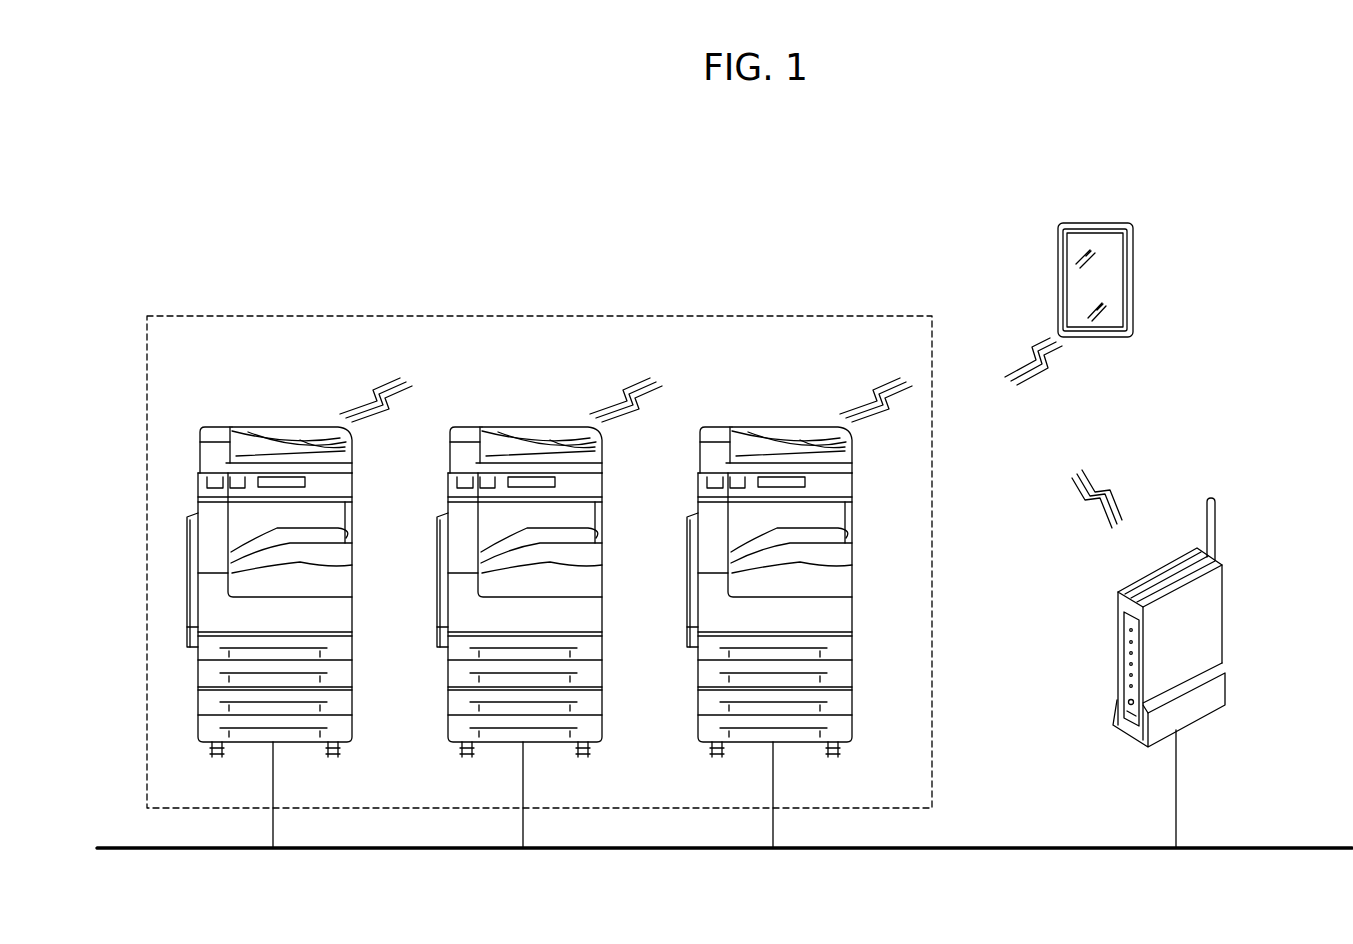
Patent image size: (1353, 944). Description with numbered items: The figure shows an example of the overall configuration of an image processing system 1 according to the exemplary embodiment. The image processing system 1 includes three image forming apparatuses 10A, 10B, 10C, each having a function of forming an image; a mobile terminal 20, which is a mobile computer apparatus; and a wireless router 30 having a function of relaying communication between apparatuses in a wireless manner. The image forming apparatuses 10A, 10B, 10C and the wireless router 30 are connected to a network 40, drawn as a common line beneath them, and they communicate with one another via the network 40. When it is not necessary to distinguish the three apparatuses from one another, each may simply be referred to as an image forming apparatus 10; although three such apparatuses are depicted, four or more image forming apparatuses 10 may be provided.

The image processing system 1 is at (1232, 225).
The image forming apparatus 10 is at (200, 315).
The image forming apparatus 10A is at (235, 427).
The image forming apparatus 10B is at (485, 427).
The image forming apparatus 10C is at (735, 427).
The mobile terminal 20 is at (1058, 240).
The wireless router 30 is at (1157, 565).
The network 40 is at (1305, 847).